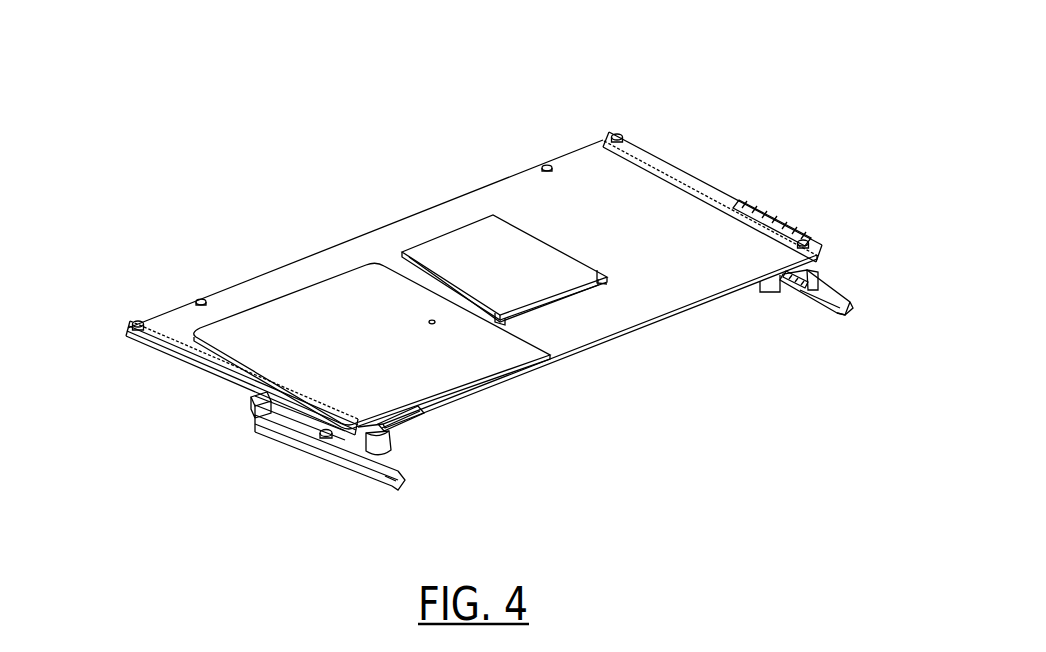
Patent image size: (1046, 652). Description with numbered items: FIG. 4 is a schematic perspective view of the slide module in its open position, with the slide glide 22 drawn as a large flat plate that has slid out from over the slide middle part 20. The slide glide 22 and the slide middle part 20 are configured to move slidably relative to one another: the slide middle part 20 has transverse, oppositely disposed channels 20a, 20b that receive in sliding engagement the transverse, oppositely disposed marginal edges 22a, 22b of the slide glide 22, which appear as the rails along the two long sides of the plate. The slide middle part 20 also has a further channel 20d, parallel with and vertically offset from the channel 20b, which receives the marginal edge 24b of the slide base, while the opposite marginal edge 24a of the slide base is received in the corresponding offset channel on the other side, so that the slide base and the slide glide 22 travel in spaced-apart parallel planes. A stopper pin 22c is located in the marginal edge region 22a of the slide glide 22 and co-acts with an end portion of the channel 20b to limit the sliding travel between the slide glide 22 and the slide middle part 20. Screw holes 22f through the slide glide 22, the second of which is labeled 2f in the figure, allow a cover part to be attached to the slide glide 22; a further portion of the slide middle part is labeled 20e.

The slide glide 22 is at (420, 208).
The hole 2f is at (547, 166).
The screw holes 22f is at (201, 300).
The stopper pin 22c is at (138, 321).
The marginal edge 22a is at (185, 365).
The marginal edge 22b is at (645, 148).
The slide middle part 20 is at (262, 427).
The channel 20a is at (280, 420).
The channel 20b is at (767, 208).
The channel 20d is at (807, 270).
The clamp bar 20e is at (347, 467).
The marginal edge 24a is at (370, 487).
The marginal edge 24b is at (837, 293).